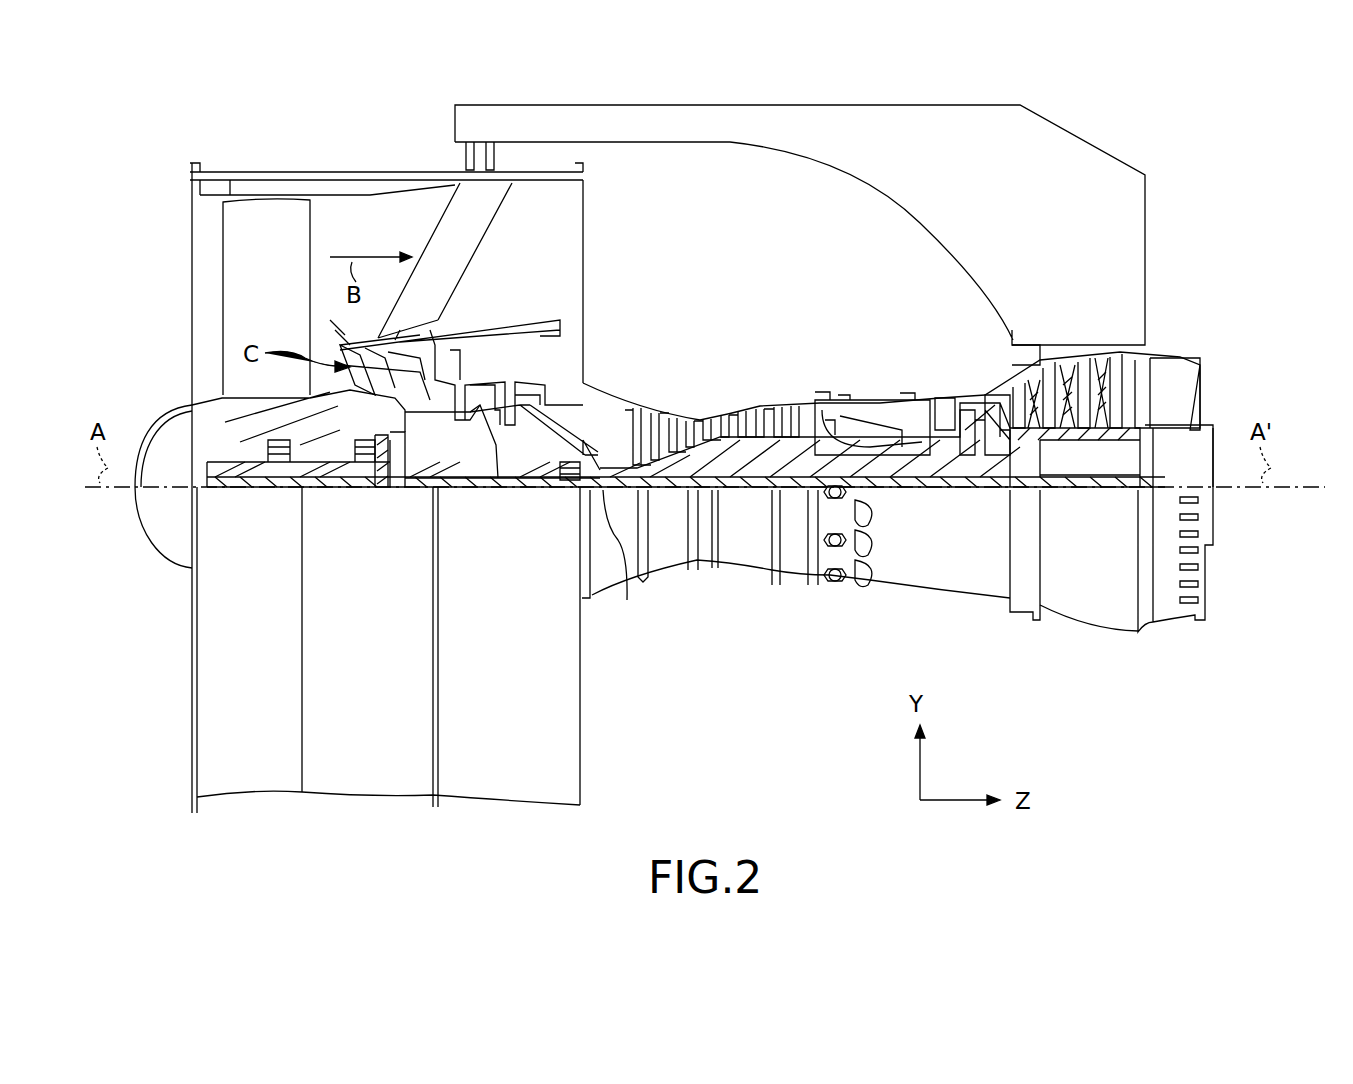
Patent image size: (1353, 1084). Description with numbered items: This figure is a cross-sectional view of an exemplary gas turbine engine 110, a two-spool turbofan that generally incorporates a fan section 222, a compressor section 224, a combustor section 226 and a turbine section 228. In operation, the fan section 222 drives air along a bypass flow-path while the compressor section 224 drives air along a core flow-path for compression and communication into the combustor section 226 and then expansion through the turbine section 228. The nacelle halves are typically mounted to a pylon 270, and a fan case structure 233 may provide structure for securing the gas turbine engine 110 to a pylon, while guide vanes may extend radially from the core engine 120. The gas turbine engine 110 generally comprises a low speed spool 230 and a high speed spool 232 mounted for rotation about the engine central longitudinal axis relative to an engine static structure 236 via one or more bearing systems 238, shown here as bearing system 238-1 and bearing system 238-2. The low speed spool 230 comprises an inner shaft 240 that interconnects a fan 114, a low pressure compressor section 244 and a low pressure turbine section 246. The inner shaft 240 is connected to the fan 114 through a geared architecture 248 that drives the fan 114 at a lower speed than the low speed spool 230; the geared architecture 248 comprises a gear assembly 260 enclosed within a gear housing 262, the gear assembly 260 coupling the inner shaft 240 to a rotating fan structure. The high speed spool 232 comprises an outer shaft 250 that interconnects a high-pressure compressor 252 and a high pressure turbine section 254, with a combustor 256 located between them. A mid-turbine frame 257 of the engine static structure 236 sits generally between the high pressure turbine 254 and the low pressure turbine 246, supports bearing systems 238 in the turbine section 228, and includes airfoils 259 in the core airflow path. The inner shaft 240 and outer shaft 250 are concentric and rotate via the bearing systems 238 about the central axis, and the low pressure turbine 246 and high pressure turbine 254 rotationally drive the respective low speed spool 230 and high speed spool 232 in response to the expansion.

The gas turbine engine 110 is at (1240, 198).
The fan 114 is at (291, 302).
The core engine 120 is at (757, 250).
The fan section 222 is at (430, 157).
The compressor section 224 is at (817, 286).
The combustor section 226 is at (927, 286).
The turbine section 228 is at (1145, 286).
The low speed spool 230 is at (746, 510).
The high speed spool 232 is at (790, 455).
The fan case structure 233 is at (580, 845).
The engine static structure 236 is at (790, 568).
The bearing system 238 is at (993, 470).
The bearing system 238-1 is at (280, 468).
The bearing system 238-2 is at (537, 488).
The inner shaft 240 is at (608, 492).
The low pressure compressor section 244 is at (510, 385).
The low pressure turbine section 246 is at (1072, 392).
The geared architecture 248 is at (393, 522).
The outer shaft 250 is at (858, 455).
The high-pressure compressor 252 is at (728, 455).
The high pressure turbine section 254 is at (935, 455).
The combustor 256 is at (863, 425).
The mid-turbine frame 257 is at (988, 455).
The airfoils 259 is at (982, 440).
The gear assembly 260 is at (400, 485).
The gear housing 262 is at (400, 437).
The pylon 270 is at (1085, 155).